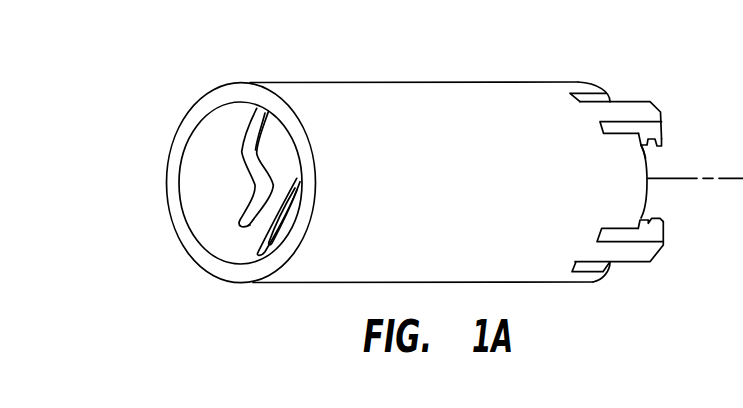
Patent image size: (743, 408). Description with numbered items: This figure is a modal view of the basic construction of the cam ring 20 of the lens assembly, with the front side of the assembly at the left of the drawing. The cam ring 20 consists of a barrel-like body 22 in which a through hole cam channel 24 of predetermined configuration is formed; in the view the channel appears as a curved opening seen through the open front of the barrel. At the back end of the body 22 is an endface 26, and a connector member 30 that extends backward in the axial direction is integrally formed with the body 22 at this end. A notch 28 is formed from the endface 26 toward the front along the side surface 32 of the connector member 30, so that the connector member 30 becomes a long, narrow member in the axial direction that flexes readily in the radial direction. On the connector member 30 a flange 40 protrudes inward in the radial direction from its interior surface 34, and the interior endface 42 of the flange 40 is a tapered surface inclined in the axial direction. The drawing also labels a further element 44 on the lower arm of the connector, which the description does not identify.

The cam ring 20 is at (415, 81).
The barrel-like body 22 is at (374, 81).
The through hole cam channel 24 is at (244, 140).
The endface 26 is at (650, 171).
The notch 28 is at (588, 102).
The connector member 30 is at (627, 102).
The side surface 32 is at (647, 128).
The interior surface 34 is at (643, 152).
The flange 40 is at (658, 140).
The interior endface 42 is at (662, 218).
The lower hook 44 is at (644, 222).